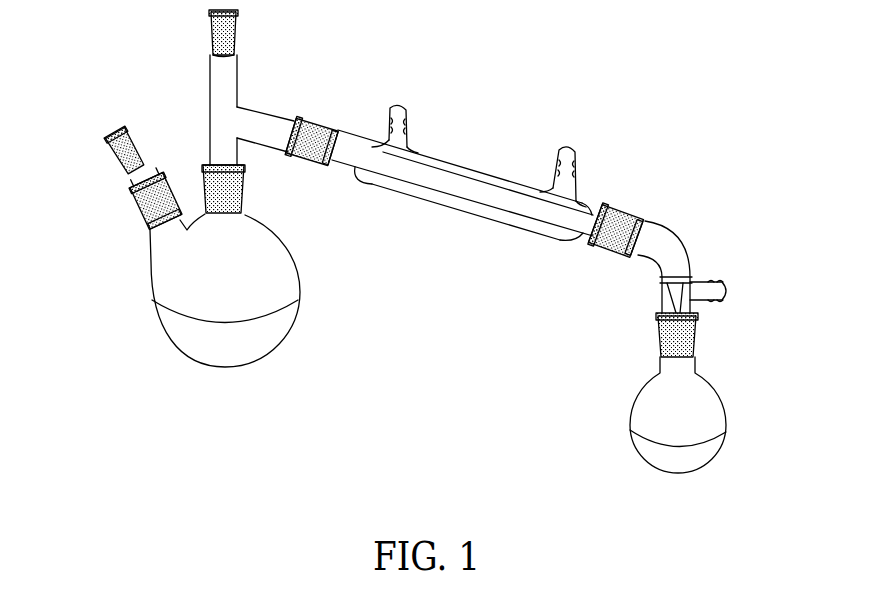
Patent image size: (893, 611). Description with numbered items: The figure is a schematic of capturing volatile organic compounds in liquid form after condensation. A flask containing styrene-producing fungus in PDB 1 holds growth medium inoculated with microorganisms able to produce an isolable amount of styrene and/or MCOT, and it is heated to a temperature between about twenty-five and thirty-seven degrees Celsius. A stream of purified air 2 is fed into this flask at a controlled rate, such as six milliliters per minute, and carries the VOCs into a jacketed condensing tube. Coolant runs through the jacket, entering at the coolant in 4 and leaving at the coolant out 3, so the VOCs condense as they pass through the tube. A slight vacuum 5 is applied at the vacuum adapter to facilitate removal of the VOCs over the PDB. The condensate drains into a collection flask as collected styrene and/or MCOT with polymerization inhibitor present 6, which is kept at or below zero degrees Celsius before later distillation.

The flask containing styrene-producing fungus in PDB 1 is at (180, 337).
The stream of purified air 2 is at (103, 125).
The coolant out 3 is at (407, 97).
The coolant in 4 is at (573, 142).
The slight vacuum 5 is at (735, 289).
The collected styrene and/or MCOT with polymerization inhibitor 6 is at (712, 448).